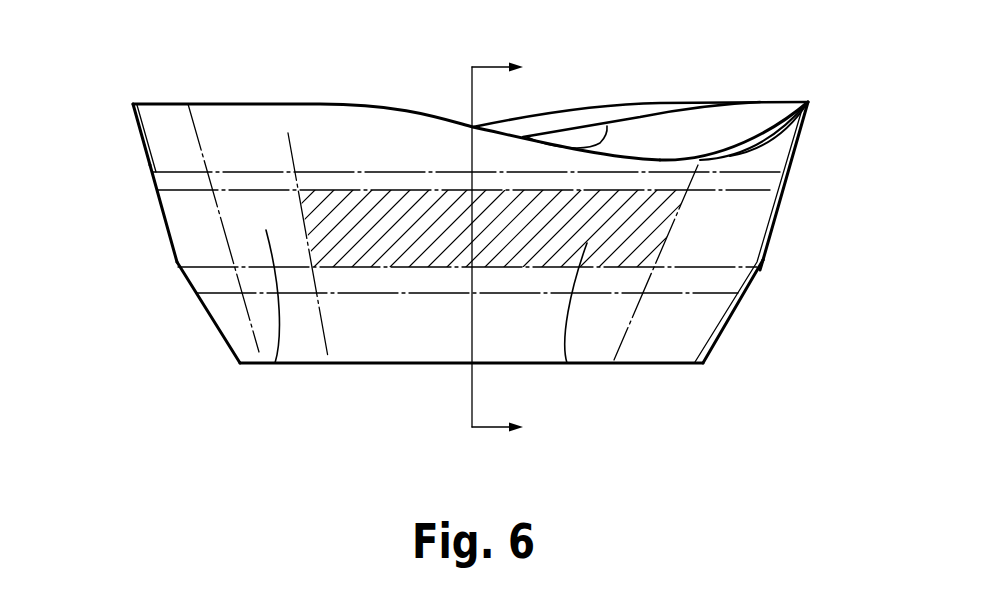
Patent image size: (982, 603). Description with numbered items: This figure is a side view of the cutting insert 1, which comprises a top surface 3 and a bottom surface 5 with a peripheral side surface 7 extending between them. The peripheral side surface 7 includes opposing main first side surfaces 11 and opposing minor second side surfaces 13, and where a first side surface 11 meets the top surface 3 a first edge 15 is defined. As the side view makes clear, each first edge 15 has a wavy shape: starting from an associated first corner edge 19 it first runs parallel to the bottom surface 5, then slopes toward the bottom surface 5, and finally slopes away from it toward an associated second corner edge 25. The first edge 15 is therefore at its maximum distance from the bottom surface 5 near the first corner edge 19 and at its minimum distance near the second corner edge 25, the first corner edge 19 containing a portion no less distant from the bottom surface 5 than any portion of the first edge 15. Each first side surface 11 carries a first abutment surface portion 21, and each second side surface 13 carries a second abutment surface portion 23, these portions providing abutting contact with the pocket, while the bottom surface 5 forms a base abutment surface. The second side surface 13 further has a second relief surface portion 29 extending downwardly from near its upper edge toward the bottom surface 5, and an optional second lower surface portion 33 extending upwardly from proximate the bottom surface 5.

The cutting insert 1 is at (143, 62).
The top surface 3 is at (597, 114).
The bottom surface 5 is at (381, 366).
The peripheral side surface 7 is at (468, 232).
The first side surface 11 is at (275, 363).
The second side surface 13 is at (765, 260).
The first edge 15 is at (327, 105).
The first corner edge 19 is at (133, 104).
The first abutment surface portion 21 is at (567, 363).
The second abutment surface portion 23 is at (167, 220).
The second corner edge 25 is at (808, 103).
The second relief surface portion 29 is at (152, 153).
The second lower surface portion 33 is at (210, 318).